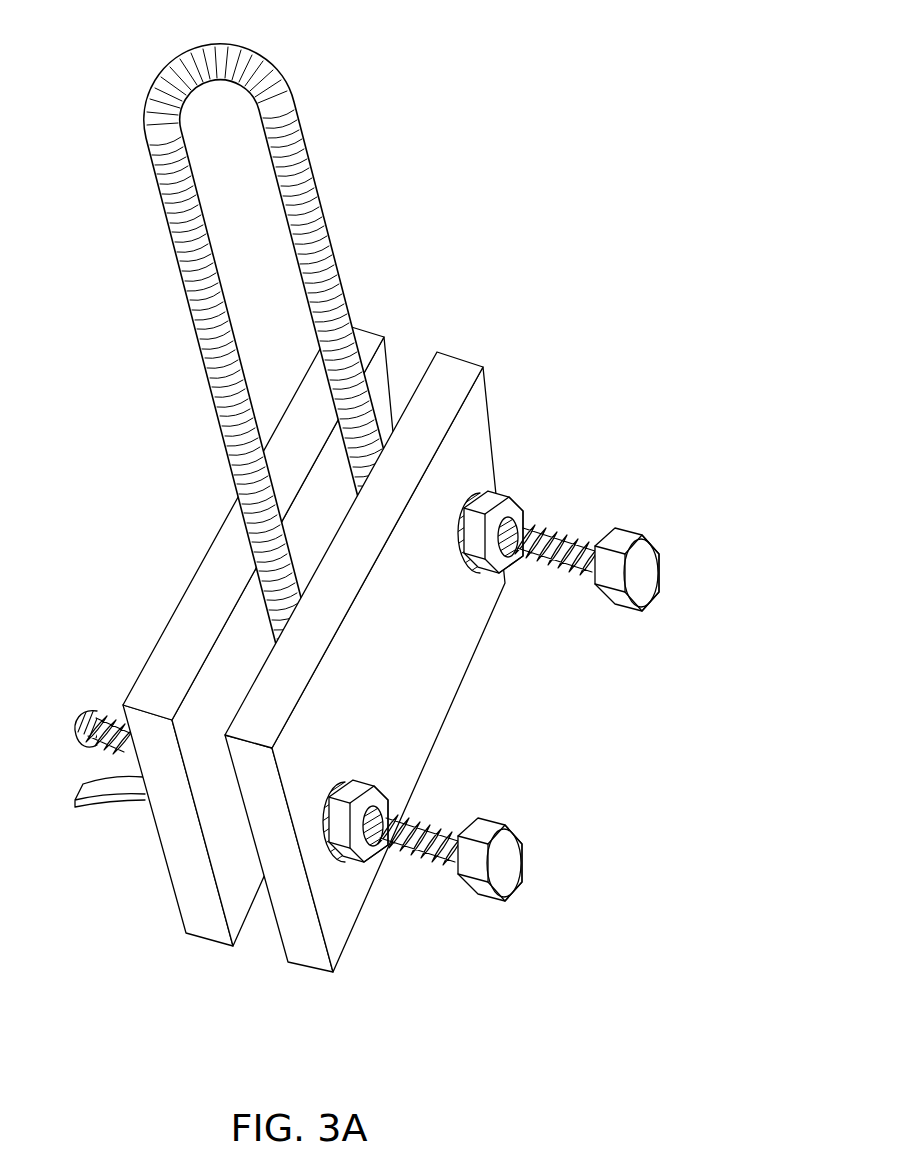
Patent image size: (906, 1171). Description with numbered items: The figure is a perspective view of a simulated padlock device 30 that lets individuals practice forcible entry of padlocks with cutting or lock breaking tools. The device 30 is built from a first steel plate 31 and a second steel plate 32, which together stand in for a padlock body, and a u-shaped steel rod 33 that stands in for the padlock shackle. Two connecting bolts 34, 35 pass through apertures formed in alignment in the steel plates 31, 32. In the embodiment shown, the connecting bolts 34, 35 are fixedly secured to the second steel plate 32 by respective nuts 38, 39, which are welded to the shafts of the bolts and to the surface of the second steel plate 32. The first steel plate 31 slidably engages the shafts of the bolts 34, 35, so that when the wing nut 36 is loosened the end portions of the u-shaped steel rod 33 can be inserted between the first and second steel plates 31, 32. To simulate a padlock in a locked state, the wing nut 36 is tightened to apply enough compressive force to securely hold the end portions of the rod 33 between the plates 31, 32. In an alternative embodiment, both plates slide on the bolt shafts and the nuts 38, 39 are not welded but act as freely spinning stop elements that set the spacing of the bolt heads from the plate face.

The simulated padlock device 30 is at (382, 499).
The first steel plate 31 is at (170, 877).
The second steel plate 32 is at (275, 922).
The u-shaped steel rod 33 is at (318, 193).
The connecting bolt 34 is at (502, 818).
The connecting bolt 35 is at (643, 540).
The wing nut 36 is at (78, 813).
The nut 38 is at (355, 855).
The nut 39 is at (512, 497).